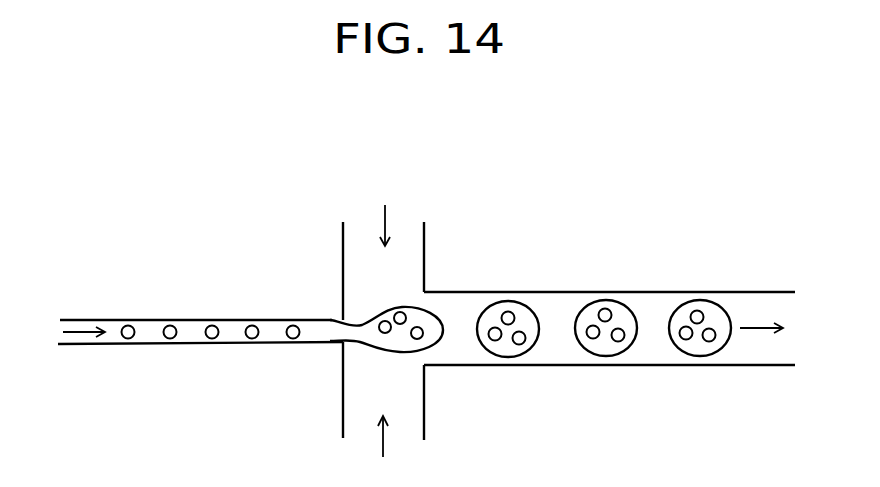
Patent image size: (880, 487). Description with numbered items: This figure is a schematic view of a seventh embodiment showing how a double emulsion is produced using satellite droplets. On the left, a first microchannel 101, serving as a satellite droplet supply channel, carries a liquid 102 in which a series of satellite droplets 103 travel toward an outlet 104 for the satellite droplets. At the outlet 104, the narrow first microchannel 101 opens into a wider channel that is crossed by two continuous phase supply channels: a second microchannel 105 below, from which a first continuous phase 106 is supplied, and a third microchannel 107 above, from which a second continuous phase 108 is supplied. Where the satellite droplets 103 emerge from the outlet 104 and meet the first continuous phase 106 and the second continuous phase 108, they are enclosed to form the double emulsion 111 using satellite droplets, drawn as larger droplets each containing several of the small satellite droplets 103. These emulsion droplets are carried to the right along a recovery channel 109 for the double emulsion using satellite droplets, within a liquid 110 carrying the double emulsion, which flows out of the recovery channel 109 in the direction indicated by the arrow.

The first microchannel 101 is at (128, 320).
The liquid carrying satellite droplets 102 is at (82, 330).
The satellite droplet 103 is at (212, 320).
The outlet for the satellite droplets 104 is at (333, 330).
The second microchannel 105 is at (424, 407).
The first continuous phase 106 is at (383, 430).
The third microchannel 107 is at (424, 250).
The second continuous phase 108 is at (385, 224).
The recovery channel 109 is at (715, 292).
The liquid carrying the double emulsion 110 is at (763, 328).
The double emulsion using satellite droplets 111 is at (615, 302).